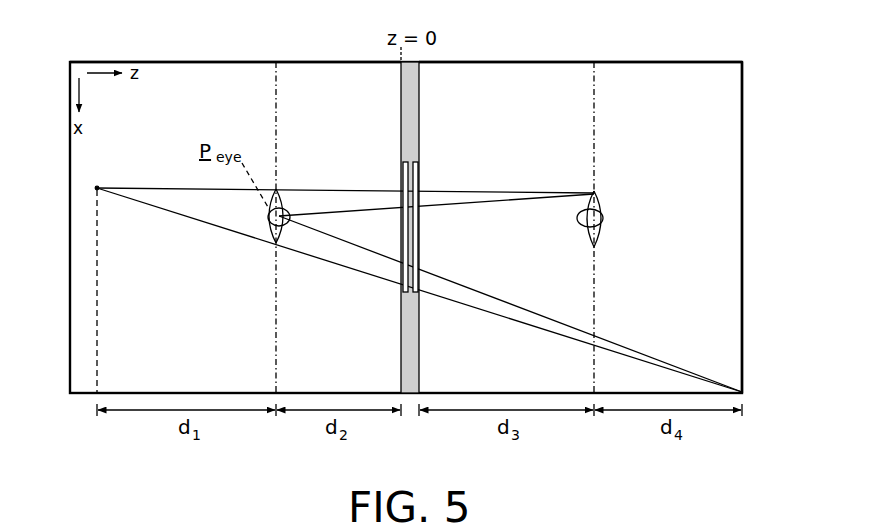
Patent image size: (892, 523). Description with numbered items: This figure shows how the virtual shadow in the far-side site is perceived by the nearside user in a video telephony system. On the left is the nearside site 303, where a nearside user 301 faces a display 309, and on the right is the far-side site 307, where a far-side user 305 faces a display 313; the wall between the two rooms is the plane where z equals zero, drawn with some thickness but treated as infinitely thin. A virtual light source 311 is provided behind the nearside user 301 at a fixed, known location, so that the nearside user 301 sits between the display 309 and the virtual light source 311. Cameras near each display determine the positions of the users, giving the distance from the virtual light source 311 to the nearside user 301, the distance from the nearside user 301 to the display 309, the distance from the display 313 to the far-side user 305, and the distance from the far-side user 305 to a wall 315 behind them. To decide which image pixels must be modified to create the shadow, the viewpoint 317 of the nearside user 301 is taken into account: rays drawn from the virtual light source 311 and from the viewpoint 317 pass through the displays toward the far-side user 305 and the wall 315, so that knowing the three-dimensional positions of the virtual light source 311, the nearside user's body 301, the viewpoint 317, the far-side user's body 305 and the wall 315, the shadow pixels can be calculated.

The nearside user 301 is at (270, 223).
The nearside site 303 is at (203, 61).
The far-side user 305 is at (600, 218).
The far-side site 307 is at (676, 61).
The display 309 is at (403, 170).
The virtual light source 311 is at (97, 188).
The display 313 is at (418, 170).
The wall 315 is at (743, 142).
The viewpoint 317 is at (282, 243).